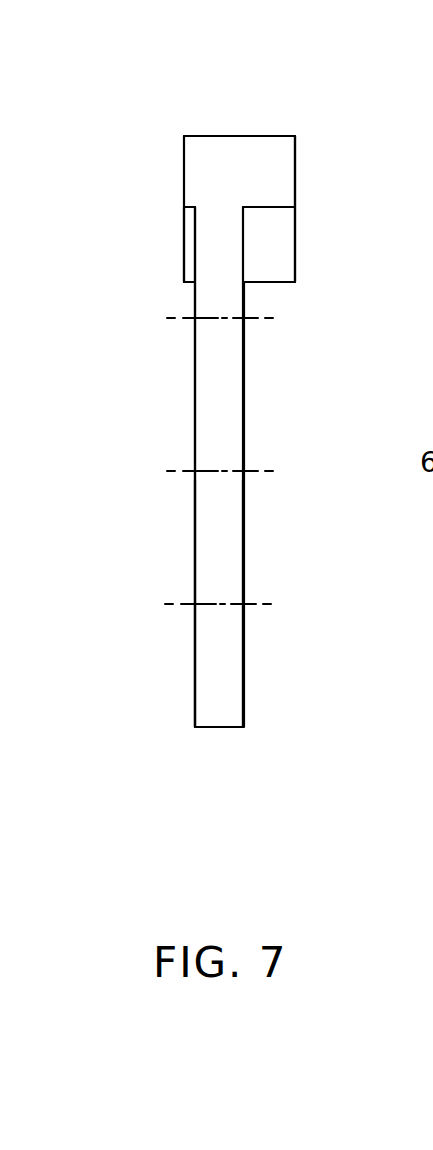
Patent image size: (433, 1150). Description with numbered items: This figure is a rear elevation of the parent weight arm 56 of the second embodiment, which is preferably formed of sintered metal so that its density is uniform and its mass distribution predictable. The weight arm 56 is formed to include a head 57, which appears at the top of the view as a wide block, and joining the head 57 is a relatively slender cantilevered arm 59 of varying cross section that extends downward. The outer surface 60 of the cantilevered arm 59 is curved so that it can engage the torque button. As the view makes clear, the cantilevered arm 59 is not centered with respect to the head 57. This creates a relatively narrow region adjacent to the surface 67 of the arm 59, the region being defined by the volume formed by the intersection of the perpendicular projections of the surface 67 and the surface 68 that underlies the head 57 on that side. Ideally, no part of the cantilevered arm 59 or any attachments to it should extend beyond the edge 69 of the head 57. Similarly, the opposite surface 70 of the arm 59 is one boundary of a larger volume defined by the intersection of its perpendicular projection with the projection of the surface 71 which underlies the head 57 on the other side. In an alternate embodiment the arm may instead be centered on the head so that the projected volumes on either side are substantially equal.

The parent weight arm 56 is at (150, 431).
The head 57 is at (232, 150).
The cantilevered arm 59 is at (228, 563).
The outer surface 60 is at (226, 429).
The surface 67 is at (196, 541).
The surface 68 is at (185, 222).
The edge 69 is at (184, 172).
The opposite surface 70 is at (243, 370).
The surface 71 is at (275, 207).